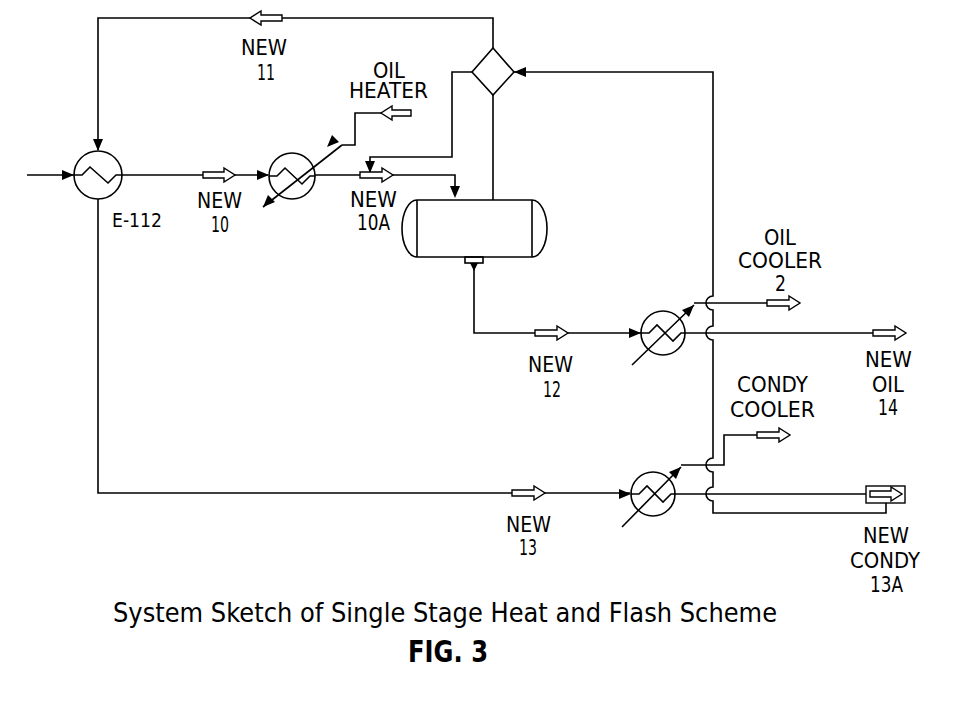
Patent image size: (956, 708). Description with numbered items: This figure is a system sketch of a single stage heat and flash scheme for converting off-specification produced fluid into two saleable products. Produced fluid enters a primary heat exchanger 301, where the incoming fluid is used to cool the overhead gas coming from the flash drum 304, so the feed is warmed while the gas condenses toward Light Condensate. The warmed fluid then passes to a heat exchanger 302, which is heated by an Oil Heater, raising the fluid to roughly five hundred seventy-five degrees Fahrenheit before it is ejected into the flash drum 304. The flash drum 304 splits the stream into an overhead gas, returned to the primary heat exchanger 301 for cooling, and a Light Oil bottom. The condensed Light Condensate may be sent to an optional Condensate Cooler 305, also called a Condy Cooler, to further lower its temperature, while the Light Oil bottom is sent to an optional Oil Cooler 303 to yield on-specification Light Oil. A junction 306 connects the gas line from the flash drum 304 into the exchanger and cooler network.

The primary heat exchanger 301 is at (87, 200).
The heat exchanger 302 is at (293, 200).
The Oil Cooler 303 is at (662, 358).
The flash drum 304 is at (505, 259).
The Condensate Cooler 305 is at (652, 518).
The flow junction A 306 is at (505, 85).